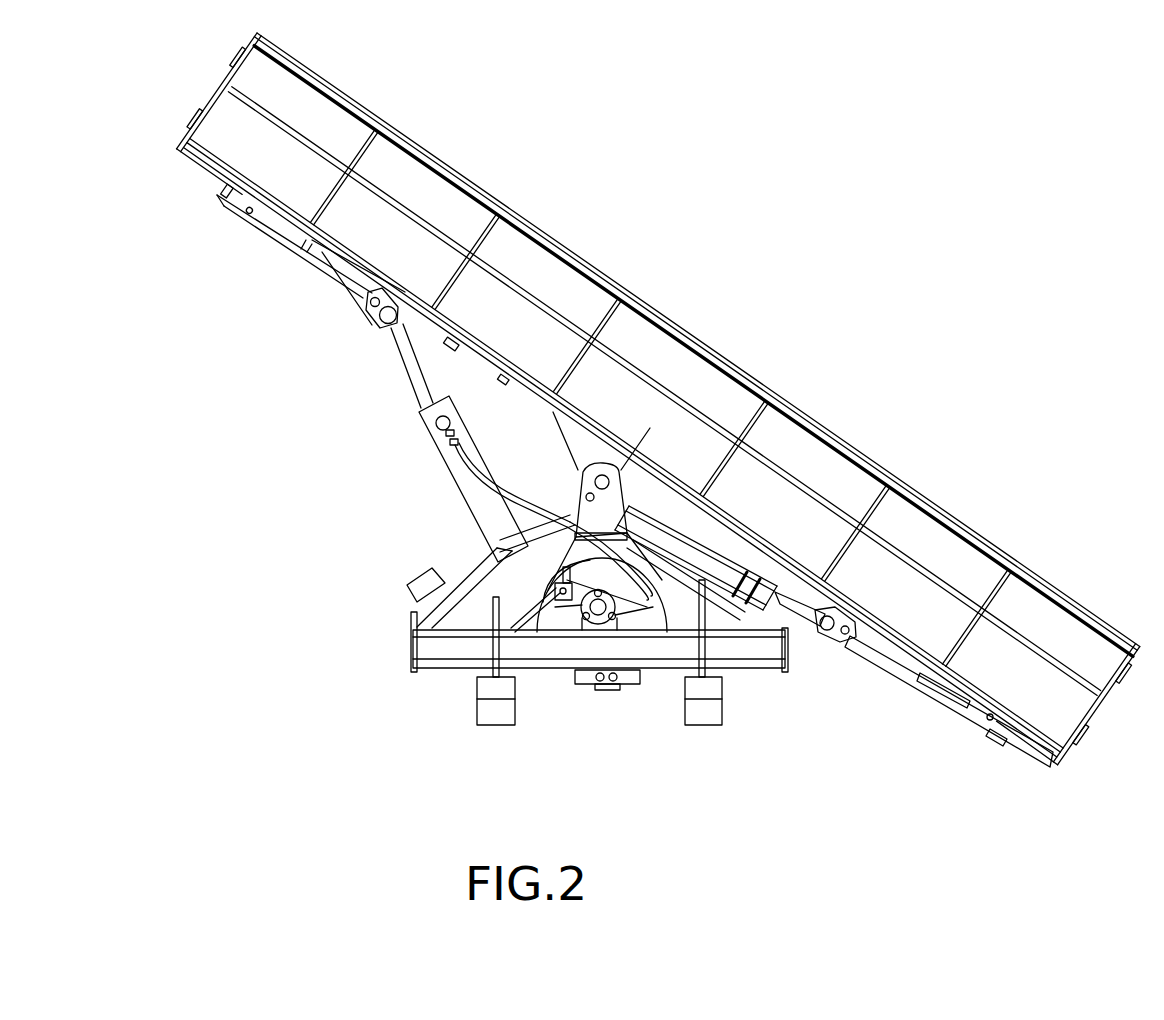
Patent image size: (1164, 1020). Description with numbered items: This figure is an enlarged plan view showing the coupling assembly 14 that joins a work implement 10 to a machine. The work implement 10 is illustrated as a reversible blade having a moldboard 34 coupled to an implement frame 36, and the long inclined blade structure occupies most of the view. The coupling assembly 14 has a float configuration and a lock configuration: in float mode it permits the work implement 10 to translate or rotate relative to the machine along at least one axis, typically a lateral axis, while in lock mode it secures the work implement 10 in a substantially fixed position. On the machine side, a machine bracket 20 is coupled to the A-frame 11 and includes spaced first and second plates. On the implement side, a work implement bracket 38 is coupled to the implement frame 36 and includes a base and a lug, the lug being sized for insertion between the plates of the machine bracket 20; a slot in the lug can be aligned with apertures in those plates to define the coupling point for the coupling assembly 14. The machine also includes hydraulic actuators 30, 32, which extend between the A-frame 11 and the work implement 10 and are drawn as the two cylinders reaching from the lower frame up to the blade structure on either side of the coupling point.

The work implement 10 is at (570, 246).
The A-frame 11 is at (458, 612).
The coupling assembly 14 is at (617, 419).
The machine bracket 20 is at (630, 545).
The hydraulic actuator 30 is at (436, 422).
The hydraulic actuator 32 is at (797, 622).
The moldboard 34 is at (935, 510).
The implement frame 36 is at (970, 687).
The work implement bracket 38 is at (630, 483).